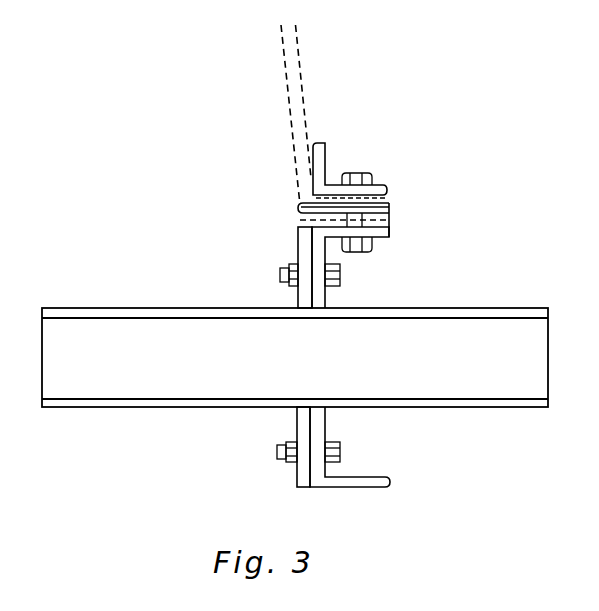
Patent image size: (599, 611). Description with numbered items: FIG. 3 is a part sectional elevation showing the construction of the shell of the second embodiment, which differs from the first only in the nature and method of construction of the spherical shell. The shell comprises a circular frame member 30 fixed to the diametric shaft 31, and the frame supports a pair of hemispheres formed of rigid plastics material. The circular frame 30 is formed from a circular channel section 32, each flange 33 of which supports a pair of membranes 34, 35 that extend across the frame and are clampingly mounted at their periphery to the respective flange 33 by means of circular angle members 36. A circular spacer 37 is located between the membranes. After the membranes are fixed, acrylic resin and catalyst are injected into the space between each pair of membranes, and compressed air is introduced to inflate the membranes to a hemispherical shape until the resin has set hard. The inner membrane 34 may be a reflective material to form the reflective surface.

The circular frame member 30 is at (337, 293).
The diametric shaft 31 is at (505, 313).
The circular channel section 32 is at (317, 253).
The flange 33 is at (380, 232).
The membrane 34 is at (287, 79).
The membrane 35 is at (305, 90).
The circular angle member 36 is at (318, 153).
The circular spacer 37 is at (383, 203).